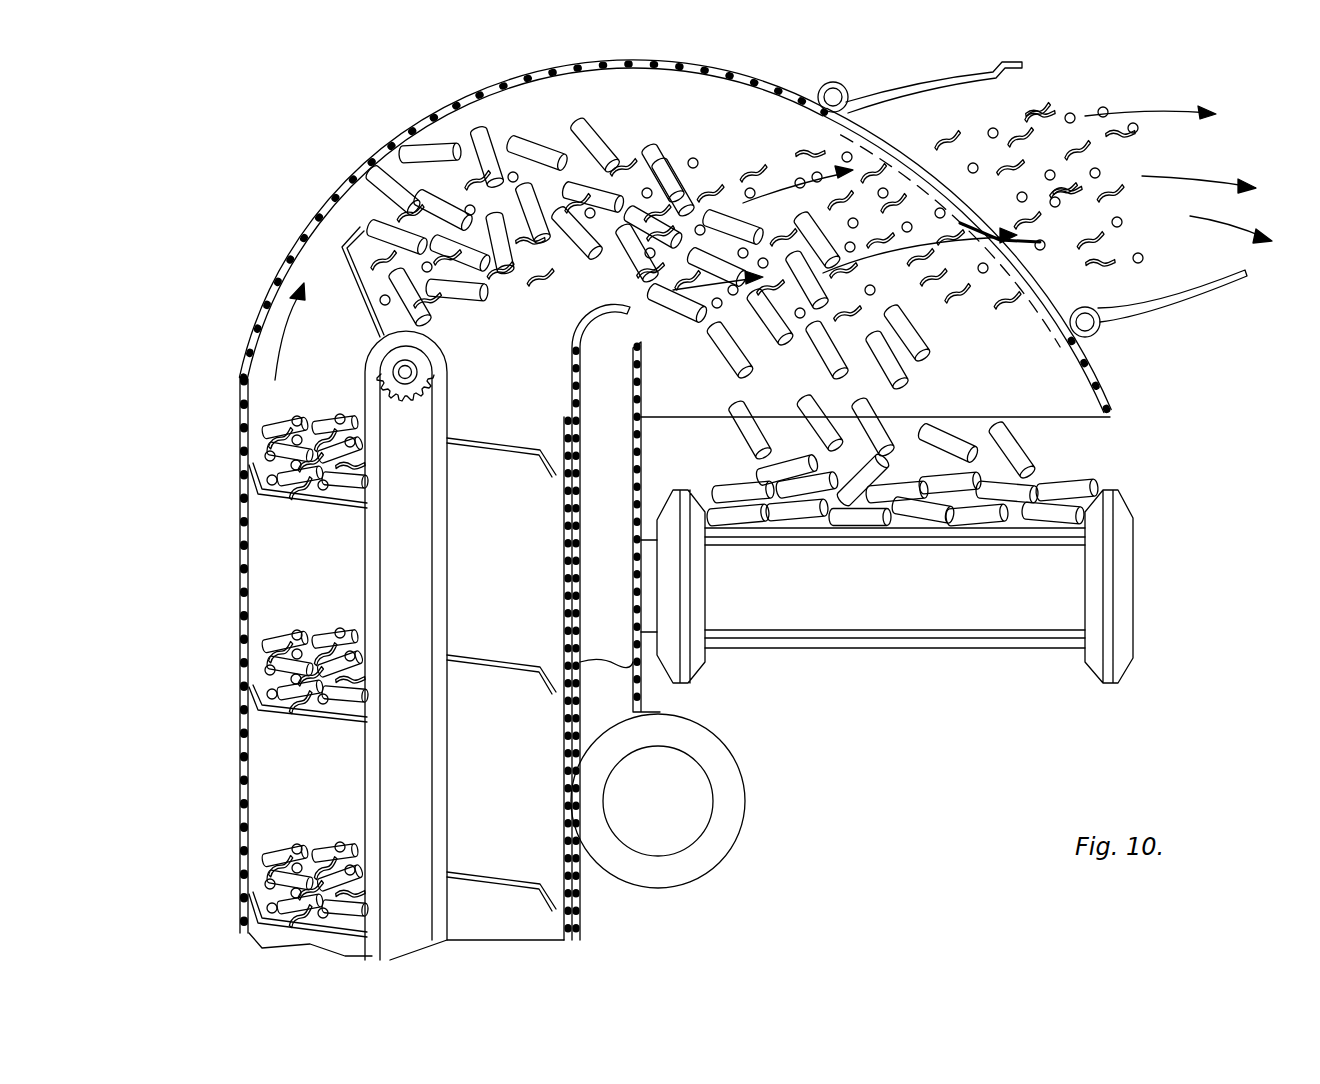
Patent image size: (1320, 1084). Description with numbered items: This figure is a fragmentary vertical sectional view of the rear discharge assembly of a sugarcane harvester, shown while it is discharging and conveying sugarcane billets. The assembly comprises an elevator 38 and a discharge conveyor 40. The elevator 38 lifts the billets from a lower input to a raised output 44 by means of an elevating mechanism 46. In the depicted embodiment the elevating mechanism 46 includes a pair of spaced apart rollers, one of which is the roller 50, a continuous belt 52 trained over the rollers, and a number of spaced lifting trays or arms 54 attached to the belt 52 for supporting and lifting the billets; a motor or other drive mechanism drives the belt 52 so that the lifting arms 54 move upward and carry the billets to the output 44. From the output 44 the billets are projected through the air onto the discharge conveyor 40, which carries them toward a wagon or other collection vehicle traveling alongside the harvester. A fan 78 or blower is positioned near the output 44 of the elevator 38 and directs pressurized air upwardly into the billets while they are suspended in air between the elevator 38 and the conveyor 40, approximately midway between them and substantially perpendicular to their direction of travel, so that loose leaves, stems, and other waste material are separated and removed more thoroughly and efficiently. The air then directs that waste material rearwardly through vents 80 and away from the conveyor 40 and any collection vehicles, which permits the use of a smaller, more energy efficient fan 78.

The elevator 38 is at (247, 650).
The discharge conveyor 40 is at (1140, 468).
The raised output 44 is at (805, 83).
The elevating mechanism 46 is at (356, 556).
The roller 50 is at (410, 368).
The continuous belt 52 is at (375, 792).
The lifting arms 54 is at (287, 490).
The fan 78 is at (717, 848).
The vents 80 is at (1030, 93).